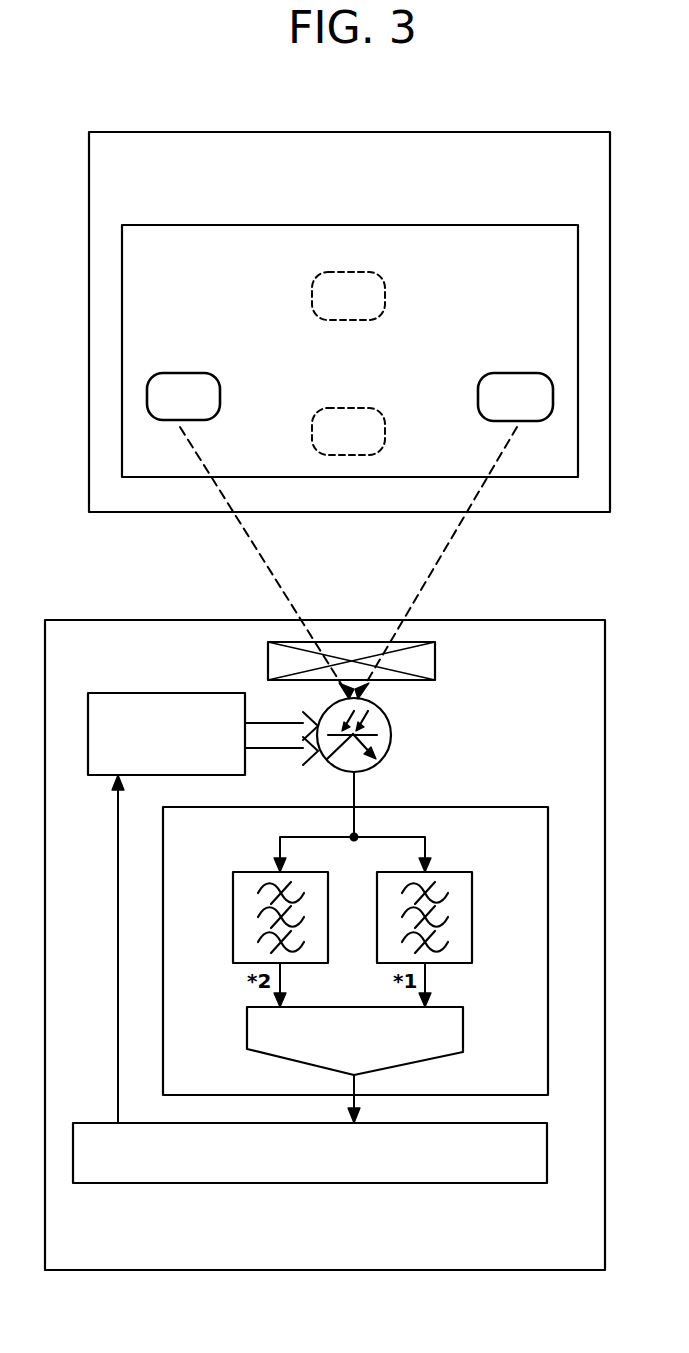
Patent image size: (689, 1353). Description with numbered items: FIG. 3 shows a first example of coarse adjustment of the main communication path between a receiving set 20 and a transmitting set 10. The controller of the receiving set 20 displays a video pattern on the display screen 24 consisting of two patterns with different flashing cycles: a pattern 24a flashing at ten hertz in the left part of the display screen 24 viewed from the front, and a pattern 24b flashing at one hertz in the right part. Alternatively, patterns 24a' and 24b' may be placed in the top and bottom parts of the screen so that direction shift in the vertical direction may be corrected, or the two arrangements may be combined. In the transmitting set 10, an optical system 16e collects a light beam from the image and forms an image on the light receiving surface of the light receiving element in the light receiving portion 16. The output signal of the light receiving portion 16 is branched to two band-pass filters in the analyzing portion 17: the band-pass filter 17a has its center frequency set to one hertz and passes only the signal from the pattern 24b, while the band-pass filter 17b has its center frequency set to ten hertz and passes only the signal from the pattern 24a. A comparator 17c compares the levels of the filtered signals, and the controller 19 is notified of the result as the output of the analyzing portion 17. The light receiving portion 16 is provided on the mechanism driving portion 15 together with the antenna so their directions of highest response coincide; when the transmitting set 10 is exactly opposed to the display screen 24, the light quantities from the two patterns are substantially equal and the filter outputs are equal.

The receiving set 20 is at (535, 133).
The display screen 24 is at (522, 225).
The pattern 24a is at (195, 365).
The pattern 24a' is at (392, 287).
The pattern 24b is at (517, 366).
The pattern 24b' is at (365, 399).
The transmitting set 10 is at (558, 620).
The mechanism driving portion 15 is at (193, 693).
The optical system 16e is at (437, 668).
The light receiving portion 16 is at (391, 736).
The analyzing portion 17 is at (520, 807).
The band-pass filter 17a is at (455, 872).
The band-pass filter 17b is at (250, 872).
The comparator 17c is at (463, 1033).
The controller 19 is at (148, 1183).